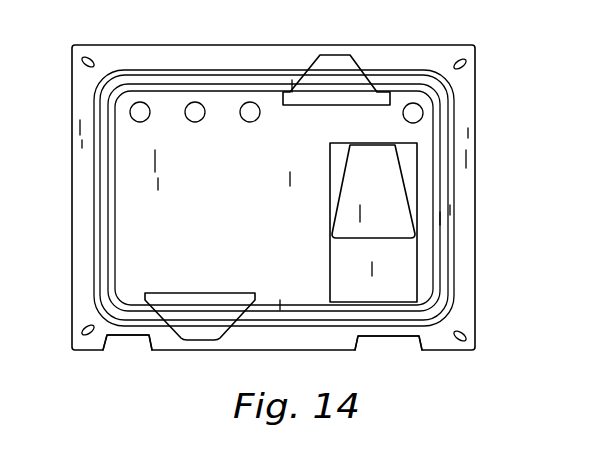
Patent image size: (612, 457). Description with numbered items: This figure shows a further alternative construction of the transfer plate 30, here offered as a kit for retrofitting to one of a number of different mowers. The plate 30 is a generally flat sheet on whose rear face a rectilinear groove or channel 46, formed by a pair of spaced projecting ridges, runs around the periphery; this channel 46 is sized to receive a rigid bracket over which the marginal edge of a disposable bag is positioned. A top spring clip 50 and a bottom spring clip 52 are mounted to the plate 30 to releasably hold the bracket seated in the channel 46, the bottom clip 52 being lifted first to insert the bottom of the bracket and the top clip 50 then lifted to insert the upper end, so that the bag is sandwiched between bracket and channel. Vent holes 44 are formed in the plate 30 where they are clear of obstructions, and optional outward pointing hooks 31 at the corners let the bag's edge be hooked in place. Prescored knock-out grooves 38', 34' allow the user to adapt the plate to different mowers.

The transfer plate 30 is at (476, 258).
The outward pointing hooks 31 is at (84, 64).
The prescored knock-out groove 34' is at (347, 222).
The prescored knock-out groove 38' is at (264, 367).
The vent hole 44 is at (245, 107).
The rectilinear groove or channel 46 is at (440, 150).
The spring clip 50 is at (318, 75).
The spring clip 52 is at (200, 330).